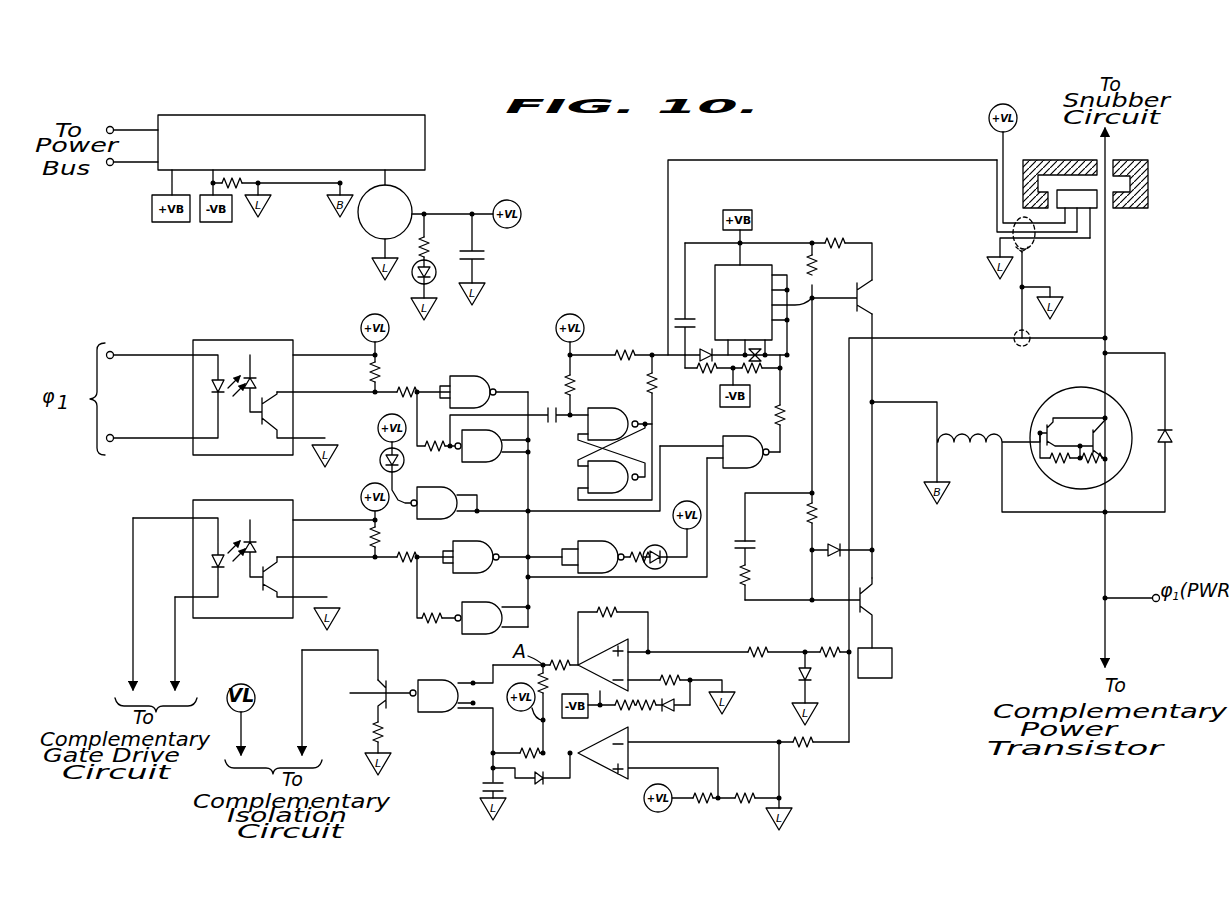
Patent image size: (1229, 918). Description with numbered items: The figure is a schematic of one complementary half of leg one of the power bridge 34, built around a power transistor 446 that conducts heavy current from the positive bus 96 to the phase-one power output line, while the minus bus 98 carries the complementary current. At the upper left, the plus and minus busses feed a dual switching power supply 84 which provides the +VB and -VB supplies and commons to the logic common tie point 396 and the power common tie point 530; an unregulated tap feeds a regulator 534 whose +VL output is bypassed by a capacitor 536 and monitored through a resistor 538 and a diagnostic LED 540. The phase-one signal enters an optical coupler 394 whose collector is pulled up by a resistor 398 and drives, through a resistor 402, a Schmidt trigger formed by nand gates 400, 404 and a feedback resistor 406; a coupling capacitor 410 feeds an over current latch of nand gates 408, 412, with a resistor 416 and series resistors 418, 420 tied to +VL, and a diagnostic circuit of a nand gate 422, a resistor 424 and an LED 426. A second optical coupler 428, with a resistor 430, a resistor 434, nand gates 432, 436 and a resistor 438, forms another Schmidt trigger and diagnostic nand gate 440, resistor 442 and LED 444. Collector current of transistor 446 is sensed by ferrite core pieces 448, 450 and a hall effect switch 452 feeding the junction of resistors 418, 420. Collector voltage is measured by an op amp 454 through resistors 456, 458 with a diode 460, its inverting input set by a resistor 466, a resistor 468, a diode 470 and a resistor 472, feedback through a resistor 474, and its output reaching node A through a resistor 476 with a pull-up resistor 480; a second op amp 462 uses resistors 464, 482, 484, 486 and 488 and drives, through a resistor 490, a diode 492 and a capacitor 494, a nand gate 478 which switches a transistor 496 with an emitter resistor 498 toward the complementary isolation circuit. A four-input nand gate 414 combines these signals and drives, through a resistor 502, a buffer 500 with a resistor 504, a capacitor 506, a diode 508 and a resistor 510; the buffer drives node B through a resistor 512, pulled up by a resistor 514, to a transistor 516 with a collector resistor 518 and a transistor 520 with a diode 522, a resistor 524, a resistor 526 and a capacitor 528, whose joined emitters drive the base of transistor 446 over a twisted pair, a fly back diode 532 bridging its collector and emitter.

The power bridge 34 is at (1112, 185).
The dual switching power supply 84 is at (393, 113).
The positive bus 96 is at (133, 129).
The minus bus 98 is at (143, 166).
The optical coupler 394 is at (222, 338).
The logic common tie point 396 is at (271, 200).
The resistor 398 is at (380, 364).
The nand gate 400 is at (481, 372).
The resistor 402 is at (399, 390).
The nand gate 404 is at (476, 462).
The resistor 406 is at (417, 453).
The nand gate 408 is at (623, 399).
The coupling capacitor 410 is at (551, 409).
The nand gate 412 is at (586, 476).
The nand gate 414 is at (739, 466).
The resistor 416 is at (574, 386).
The resistor 418 is at (655, 386).
The resistor 420 is at (622, 352).
The nand gate 422 is at (443, 519).
The resistor 424 is at (390, 473).
The light emitting diode 426 is at (378, 452).
The optical coupler 428 is at (226, 487).
The resistor 430 is at (371, 535).
The nand gate 432 is at (474, 575).
The resistor 434 is at (398, 562).
The nand gate 436 is at (476, 634).
The resistor 438 is at (440, 620).
The nand gate 440 is at (563, 547).
The resistor 442 is at (579, 543).
The LED 444 is at (637, 551).
The power transistor 446 is at (1058, 395).
The ferrite core piece 448 is at (1149, 207).
The ferrite core piece 450 is at (1058, 160).
The hall effect switch 452 is at (1098, 203).
The op amp 454 is at (661, 678).
The resistor 456 is at (830, 628).
The resistor 458 is at (768, 629).
The diode 460 is at (804, 673).
The op amp 462 is at (630, 754).
The resistor 464 is at (806, 748).
The resistor 466 is at (690, 678).
The resistor 468 is at (648, 708).
The diode 470 is at (669, 711).
The resistor 472 is at (625, 711).
The resistor 474 is at (613, 605).
The resistor 476 is at (568, 660).
The nand gate 478 is at (431, 681).
The resistor 480 is at (557, 679).
The resistor 482 is at (786, 762).
The resistor 484 is at (741, 792).
The resistor 486 is at (703, 806).
The resistor 488 is at (546, 728).
The resistor 490 is at (524, 750).
The diode 492 is at (542, 785).
The capacitor 494 is at (486, 781).
The transistor 496 is at (349, 701).
The resistor 498 is at (385, 736).
The buffer 500 is at (718, 264).
The resistor 502 is at (778, 406).
The resistor 504 is at (709, 373).
The capacitor 506 is at (680, 317).
The diode 508 is at (678, 328).
The resistor 510 is at (782, 368).
The resistor 512 is at (796, 308).
The resistor 514 is at (810, 241).
The transistor 516 is at (868, 292).
The resistor 518 is at (839, 240).
The transistor 520 is at (870, 600).
The diode 522 is at (836, 545).
The resistor 524 is at (810, 518).
The resistor 526 is at (750, 583).
The capacitor 528 is at (749, 541).
The power common tie point 530 is at (334, 212).
The fly back diode 532 is at (1171, 432).
The regulator 534 is at (403, 193).
The capacitor 536 is at (481, 254).
The resistor 538 is at (430, 233).
The LED 540 is at (412, 281).